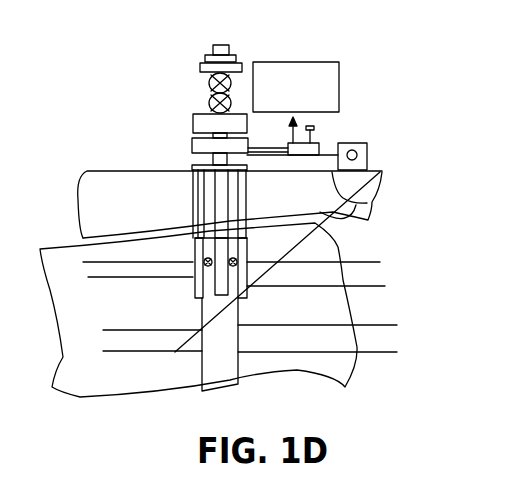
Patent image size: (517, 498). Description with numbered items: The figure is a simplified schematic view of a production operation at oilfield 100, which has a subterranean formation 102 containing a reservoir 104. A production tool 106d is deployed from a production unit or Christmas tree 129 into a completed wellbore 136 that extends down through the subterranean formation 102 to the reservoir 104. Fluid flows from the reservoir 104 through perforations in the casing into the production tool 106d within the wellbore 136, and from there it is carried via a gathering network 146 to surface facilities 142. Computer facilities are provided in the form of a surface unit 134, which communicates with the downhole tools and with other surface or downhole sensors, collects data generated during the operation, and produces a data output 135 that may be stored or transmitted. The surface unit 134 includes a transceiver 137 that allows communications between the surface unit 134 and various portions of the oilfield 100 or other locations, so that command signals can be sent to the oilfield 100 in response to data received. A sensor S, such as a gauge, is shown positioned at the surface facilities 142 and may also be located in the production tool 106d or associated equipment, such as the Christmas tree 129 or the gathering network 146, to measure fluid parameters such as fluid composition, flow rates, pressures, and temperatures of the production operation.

The oilfield 100 is at (214, 99).
The Christmas tree 129 is at (229, 50).
The data output 135 is at (339, 92).
The surface unit 134 is at (291, 135).
The transceiver 137 is at (313, 135).
The sensor S is at (354, 151).
The surface facilities 142 is at (384, 135).
The gathering network 146 is at (372, 202).
The subterranean formation 102 is at (285, 242).
The wellbore 136 is at (232, 212).
The fastener 106d is at (208, 270).
The reservoir 104 is at (322, 313).